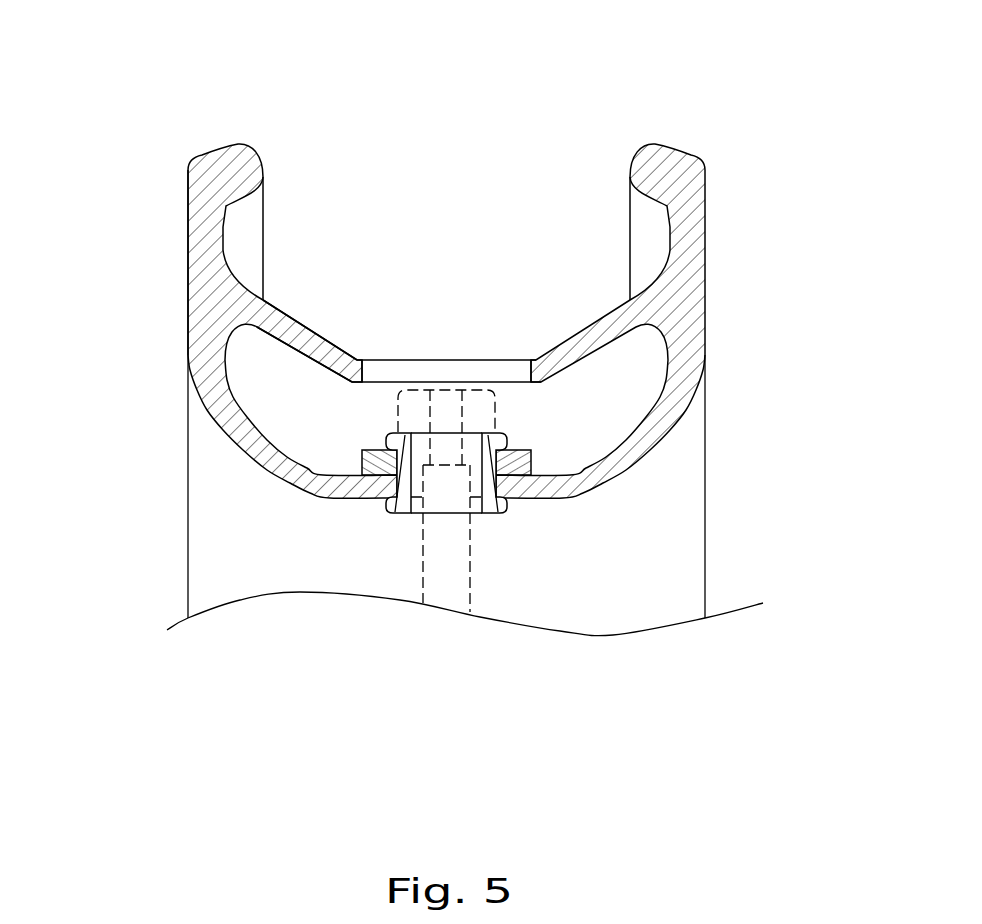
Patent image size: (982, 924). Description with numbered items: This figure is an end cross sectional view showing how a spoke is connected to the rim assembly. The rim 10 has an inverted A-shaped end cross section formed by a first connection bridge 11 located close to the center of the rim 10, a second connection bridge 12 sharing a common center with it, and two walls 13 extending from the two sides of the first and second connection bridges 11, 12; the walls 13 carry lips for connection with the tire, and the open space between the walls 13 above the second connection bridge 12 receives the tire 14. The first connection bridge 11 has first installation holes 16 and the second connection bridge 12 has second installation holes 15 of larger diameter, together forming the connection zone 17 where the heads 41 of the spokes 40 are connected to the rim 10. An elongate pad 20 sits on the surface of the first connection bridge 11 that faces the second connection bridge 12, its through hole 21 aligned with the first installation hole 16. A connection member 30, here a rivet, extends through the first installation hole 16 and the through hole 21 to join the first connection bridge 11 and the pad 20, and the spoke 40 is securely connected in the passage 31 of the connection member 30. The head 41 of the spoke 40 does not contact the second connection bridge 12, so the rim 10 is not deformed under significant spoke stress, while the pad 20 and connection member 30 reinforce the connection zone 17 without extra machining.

The rim 10 is at (708, 743).
The first connection bridge 11 is at (623, 460).
The second connection bridge 12 is at (295, 342).
The walls 13 is at (200, 238).
The tire receiving groove 14 is at (478, 208).
The second installation holes 15 is at (517, 368).
The first installation holes 16 is at (495, 487).
The connection zone 17 is at (362, 532).
The pad 20 is at (522, 460).
The through hole 21 is at (398, 468).
The connection member 30 is at (398, 512).
The passage 31 is at (443, 445).
The spoke 40 is at (443, 570).
The head 41 is at (477, 396).